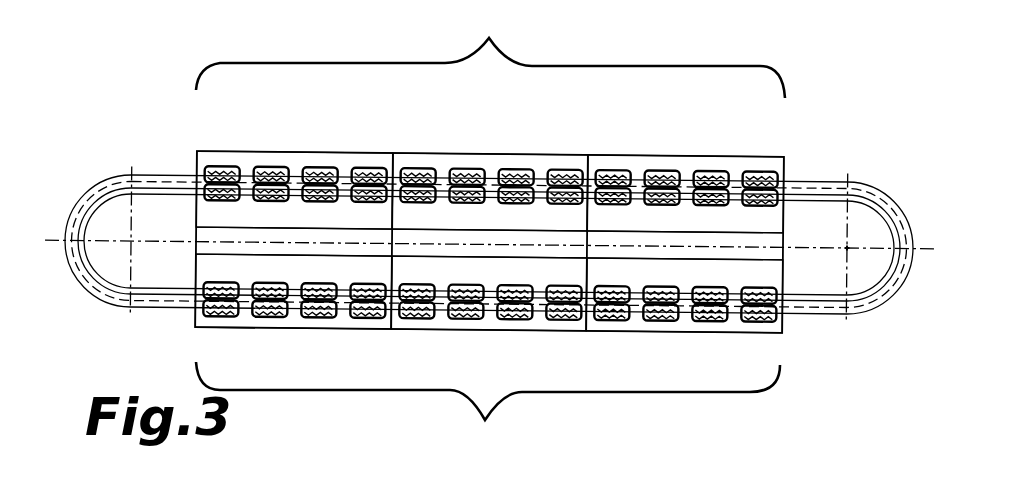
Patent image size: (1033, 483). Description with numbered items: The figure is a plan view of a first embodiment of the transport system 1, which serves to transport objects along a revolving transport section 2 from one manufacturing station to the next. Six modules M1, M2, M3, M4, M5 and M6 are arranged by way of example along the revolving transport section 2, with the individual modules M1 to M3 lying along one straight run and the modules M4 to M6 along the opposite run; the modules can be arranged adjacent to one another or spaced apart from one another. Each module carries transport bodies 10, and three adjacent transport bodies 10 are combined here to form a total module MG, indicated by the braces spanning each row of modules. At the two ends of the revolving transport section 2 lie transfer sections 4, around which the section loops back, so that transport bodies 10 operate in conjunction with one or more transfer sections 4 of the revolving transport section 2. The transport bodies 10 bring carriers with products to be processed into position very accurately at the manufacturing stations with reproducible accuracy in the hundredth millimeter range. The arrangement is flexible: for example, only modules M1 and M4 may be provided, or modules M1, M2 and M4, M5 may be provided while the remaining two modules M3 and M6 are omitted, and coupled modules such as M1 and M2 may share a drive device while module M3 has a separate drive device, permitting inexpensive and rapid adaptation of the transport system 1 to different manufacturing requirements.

The transport system 1 is at (172, 114).
The transport section 2 is at (822, 170).
The transfer section 4 is at (97, 186).
The transport body 10 is at (347, 153).
The module M1 is at (307, 334).
The module M2 is at (484, 334).
The module M3 is at (678, 334).
The module M4 is at (661, 148).
The module M5 is at (473, 148).
The module M6 is at (278, 148).
The total module MG is at (490, 237).